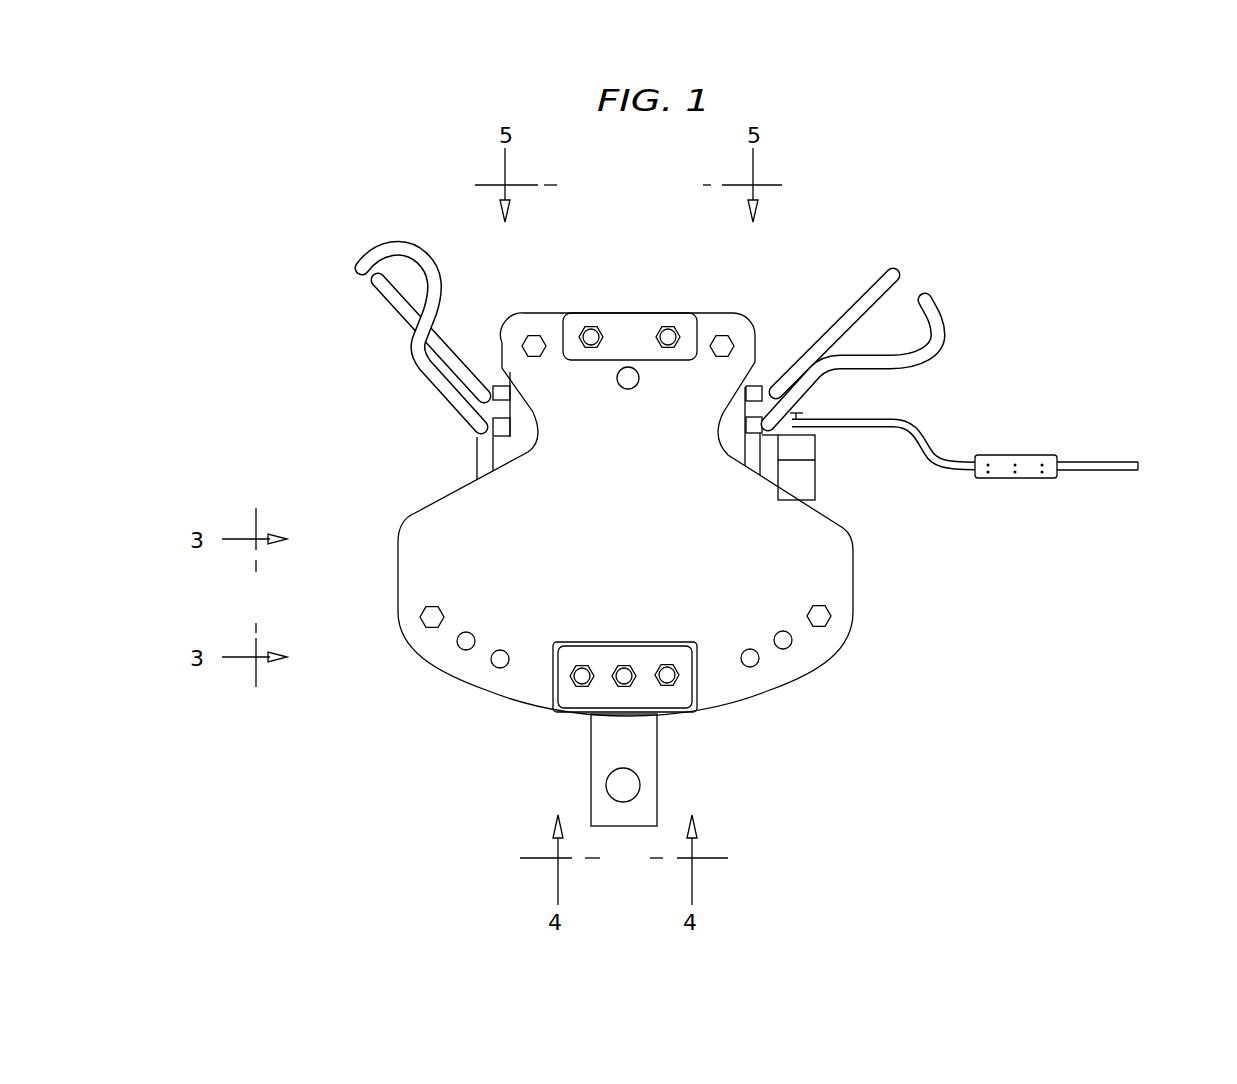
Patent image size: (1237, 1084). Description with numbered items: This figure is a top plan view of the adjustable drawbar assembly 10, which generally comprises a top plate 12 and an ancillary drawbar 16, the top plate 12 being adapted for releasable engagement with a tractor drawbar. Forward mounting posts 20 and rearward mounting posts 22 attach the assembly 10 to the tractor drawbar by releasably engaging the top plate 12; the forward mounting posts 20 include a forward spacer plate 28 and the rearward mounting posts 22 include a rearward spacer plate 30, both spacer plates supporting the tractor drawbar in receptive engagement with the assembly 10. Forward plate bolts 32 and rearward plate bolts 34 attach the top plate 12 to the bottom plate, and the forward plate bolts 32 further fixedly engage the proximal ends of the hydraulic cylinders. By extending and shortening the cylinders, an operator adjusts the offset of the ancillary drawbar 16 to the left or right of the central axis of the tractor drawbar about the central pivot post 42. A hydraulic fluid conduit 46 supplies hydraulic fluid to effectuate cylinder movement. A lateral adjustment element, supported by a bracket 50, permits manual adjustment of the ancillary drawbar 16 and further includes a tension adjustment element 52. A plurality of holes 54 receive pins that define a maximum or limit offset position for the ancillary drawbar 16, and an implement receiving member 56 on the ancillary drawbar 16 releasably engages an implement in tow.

The adjustable drawbar assembly 10 is at (1118, 733).
The top plate 12 is at (833, 563).
The ancillary drawbar 16 is at (598, 747).
The forward mounting posts 20 is at (587, 332).
The rearward mounting posts 22 is at (666, 670).
The forward spacer plate 28 is at (617, 333).
The rearward spacer plate 30 is at (700, 710).
The forward plate bolts 32 is at (535, 346).
The rearward plate bolts 34 is at (432, 617).
The central pivot post 42 is at (629, 378).
The hydraulic fluid conduit 46 is at (415, 345).
The bracket 50 is at (815, 497).
The tension adjustment element 52 is at (1003, 457).
The holes 54 is at (497, 667).
The implement receiving member 56 is at (625, 785).